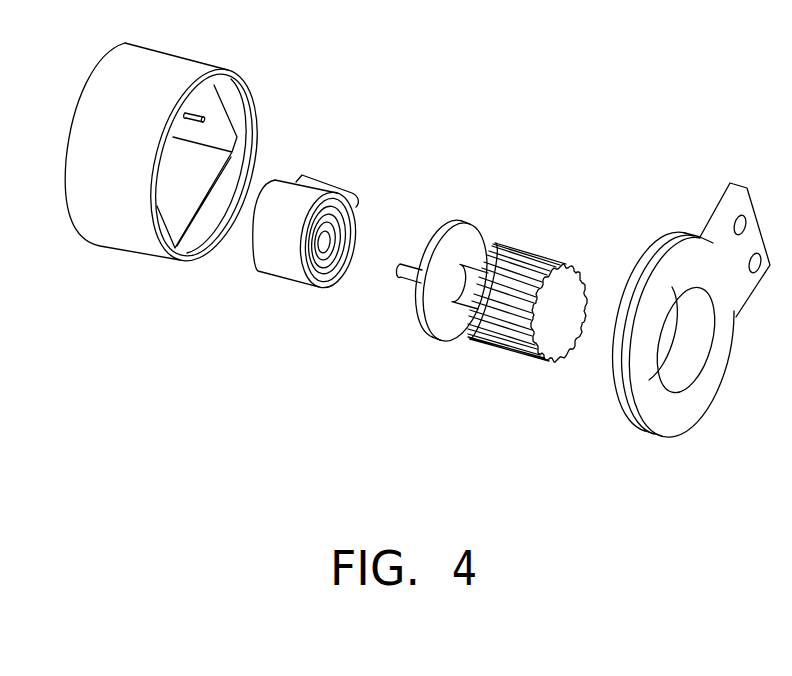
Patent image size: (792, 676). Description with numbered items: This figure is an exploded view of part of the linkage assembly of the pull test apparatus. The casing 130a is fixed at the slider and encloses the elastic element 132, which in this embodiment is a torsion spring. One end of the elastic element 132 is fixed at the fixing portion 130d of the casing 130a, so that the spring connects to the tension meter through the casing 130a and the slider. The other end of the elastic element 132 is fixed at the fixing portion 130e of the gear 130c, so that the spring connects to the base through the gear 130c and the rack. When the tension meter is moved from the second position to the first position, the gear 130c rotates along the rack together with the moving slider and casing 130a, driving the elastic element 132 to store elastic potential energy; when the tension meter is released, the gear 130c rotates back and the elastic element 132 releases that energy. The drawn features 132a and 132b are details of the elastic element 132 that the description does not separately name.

The casing 130a is at (700, 268).
The gear 130c is at (496, 328).
The fixing portion 130d is at (203, 108).
The fixing portion 130e is at (413, 266).
The elastic element 132 is at (310, 251).
The positioning protrusion 132a is at (325, 180).
The spring 132b is at (340, 242).